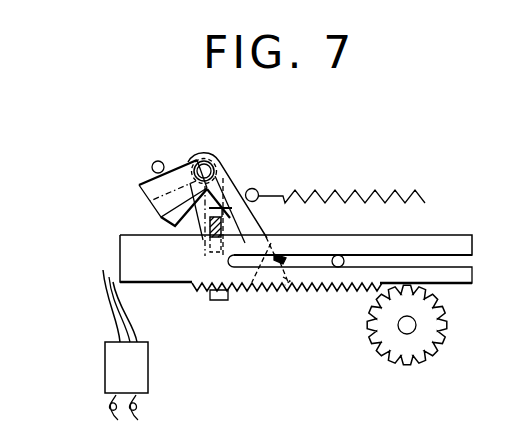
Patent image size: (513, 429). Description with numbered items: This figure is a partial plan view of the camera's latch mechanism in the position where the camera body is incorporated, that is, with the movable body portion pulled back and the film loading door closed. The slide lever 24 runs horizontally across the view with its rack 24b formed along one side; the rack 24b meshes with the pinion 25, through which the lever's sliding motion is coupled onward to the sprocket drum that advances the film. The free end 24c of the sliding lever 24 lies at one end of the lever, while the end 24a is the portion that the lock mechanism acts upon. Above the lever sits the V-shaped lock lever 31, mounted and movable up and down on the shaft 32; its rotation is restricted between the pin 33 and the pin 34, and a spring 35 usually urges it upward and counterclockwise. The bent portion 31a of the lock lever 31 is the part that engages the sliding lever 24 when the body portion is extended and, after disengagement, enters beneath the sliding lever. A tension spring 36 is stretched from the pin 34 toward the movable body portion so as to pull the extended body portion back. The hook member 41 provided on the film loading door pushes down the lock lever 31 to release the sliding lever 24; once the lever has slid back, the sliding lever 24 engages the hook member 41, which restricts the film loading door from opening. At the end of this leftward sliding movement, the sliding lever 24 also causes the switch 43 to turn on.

The slide lever 24 is at (443, 242).
The end of the sliding lever 24a is at (452, 262).
The rack 24b is at (310, 291).
The free end of the sliding lever 24c is at (118, 252).
The pinion 25 is at (390, 339).
The V-shaped lock lever 31 is at (232, 187).
The bent portion 31a is at (282, 256).
The shaft 32 is at (199, 153).
The pin 33 is at (152, 165).
The pin 34 is at (254, 188).
The spring 35 is at (139, 176).
The tension spring 36 is at (360, 190).
The hook member 41 is at (207, 218).
The switch 43 is at (136, 372).